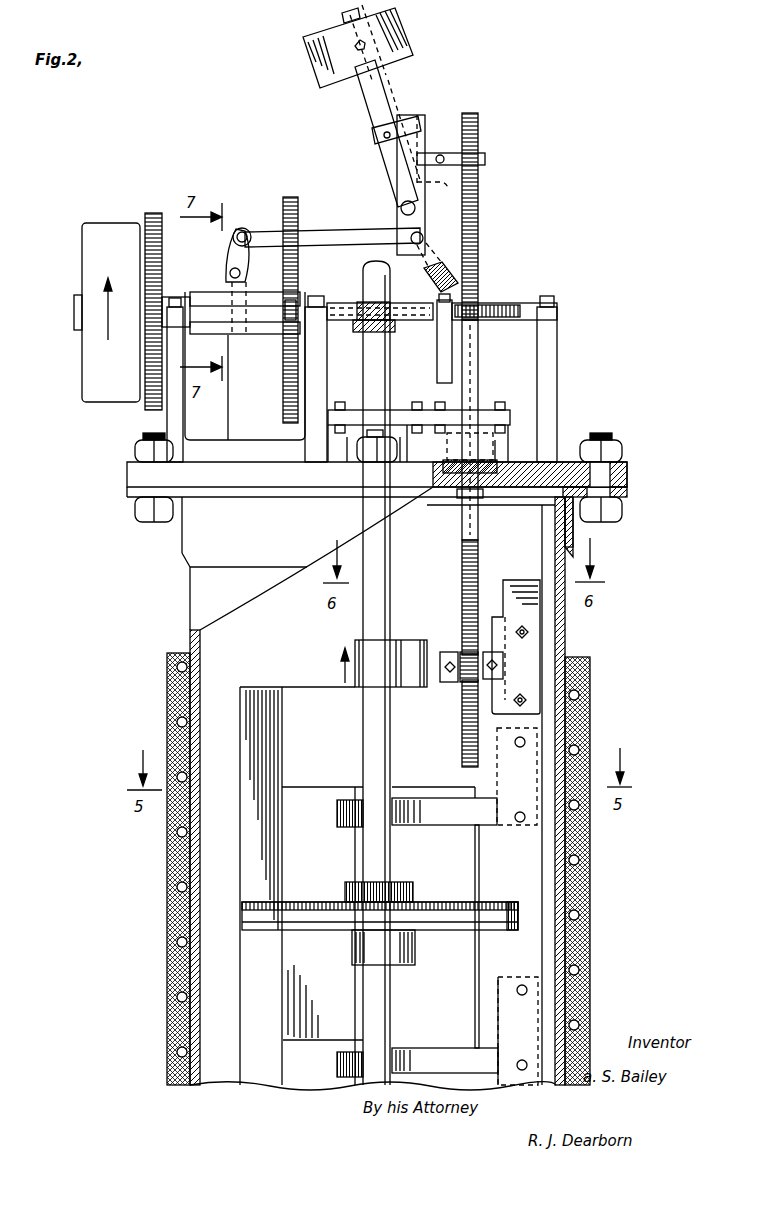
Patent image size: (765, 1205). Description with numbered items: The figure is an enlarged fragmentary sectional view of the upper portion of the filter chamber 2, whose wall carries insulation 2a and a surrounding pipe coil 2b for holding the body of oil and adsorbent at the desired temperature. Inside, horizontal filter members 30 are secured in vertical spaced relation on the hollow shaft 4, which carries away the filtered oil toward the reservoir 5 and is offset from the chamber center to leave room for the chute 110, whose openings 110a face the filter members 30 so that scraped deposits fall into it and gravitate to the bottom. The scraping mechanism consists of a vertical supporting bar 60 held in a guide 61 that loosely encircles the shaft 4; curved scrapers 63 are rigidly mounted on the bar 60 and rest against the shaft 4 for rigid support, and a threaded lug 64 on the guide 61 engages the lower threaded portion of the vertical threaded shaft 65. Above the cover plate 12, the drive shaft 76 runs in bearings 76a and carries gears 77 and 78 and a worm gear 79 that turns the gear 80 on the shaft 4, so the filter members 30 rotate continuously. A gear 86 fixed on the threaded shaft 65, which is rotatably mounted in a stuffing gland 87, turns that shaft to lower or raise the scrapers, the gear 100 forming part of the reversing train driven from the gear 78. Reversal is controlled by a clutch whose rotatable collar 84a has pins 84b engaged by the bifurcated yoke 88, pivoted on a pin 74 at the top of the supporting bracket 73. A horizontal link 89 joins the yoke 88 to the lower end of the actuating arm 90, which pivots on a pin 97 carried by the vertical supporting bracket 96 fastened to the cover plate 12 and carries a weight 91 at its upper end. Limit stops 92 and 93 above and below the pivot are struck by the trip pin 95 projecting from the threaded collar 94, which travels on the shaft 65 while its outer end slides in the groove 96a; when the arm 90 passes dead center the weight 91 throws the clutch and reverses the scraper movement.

The filter chamber 2 is at (556, 737).
The insulation 2a is at (172, 693).
The surrounding pipe coil 2b is at (172, 721).
The hollow shaft 4 is at (375, 367).
The reservoir 5 is at (108, 224).
The cover plate 12 is at (140, 477).
The filter members 30 is at (268, 922).
The vertical supporting bar 60 is at (517, 582).
The guide 61 is at (415, 643).
The scrapers 63 is at (432, 820).
The threaded lug 64 is at (446, 670).
The vertical threaded shaft 65 is at (473, 114).
The supporting bracket 73 is at (237, 406).
The pin 74 is at (229, 273).
The shaft 76 is at (74, 312).
The bearings 76a is at (173, 416).
The gear 77 is at (146, 405).
The gear 78 is at (292, 335).
The worm gear 79 is at (376, 305).
The gear 80 is at (338, 322).
The rotatable collar 84a is at (230, 335).
The pins 84b is at (270, 296).
The gear 86 is at (508, 306).
The stuffing gland 87 is at (470, 447).
The yoke 88 is at (236, 246).
The horizontal link 89 is at (313, 232).
The actuating arm 90 is at (428, 243).
The weight 91 is at (402, 42).
The limit stop 92 is at (404, 126).
The limit stop 93 is at (448, 272).
The threaded collar 94 is at (486, 157).
The trip pin 95 is at (441, 154).
The vertical supporting bracket 96 is at (423, 132).
The groove 96a is at (440, 193).
The pin 97 is at (402, 207).
The gear 100 is at (286, 335).
The chute 110 is at (247, 712).
The openings 110a is at (297, 807).